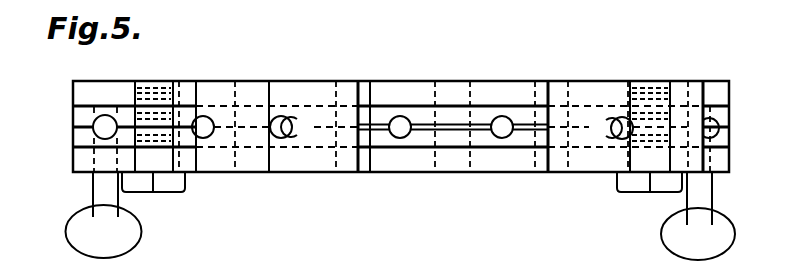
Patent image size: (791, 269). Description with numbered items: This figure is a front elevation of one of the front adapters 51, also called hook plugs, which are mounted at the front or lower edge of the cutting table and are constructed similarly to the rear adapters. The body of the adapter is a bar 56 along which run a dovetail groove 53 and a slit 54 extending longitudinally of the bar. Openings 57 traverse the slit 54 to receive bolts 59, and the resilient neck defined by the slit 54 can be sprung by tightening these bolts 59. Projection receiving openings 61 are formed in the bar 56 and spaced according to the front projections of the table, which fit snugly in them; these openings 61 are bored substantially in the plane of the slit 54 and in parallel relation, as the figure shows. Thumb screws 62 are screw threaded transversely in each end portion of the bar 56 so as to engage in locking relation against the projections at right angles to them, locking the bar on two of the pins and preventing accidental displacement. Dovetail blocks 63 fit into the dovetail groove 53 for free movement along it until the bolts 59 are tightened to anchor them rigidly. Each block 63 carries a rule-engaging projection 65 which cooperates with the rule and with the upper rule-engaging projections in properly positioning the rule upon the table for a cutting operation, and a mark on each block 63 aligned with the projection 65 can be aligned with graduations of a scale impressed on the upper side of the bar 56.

The front adapter 51 is at (64, 142).
The dovetail groove 53 is at (520, 112).
The slit 54 is at (132, 127).
The bar 56 is at (84, 93).
The openings 57 is at (180, 92).
The bolts 59 is at (170, 193).
The projection receiving openings 61 is at (497, 136).
The thumb screws 62 is at (100, 195).
The dovetail blocks 63 is at (362, 100).
The rule-engaging projection 65 is at (283, 138).